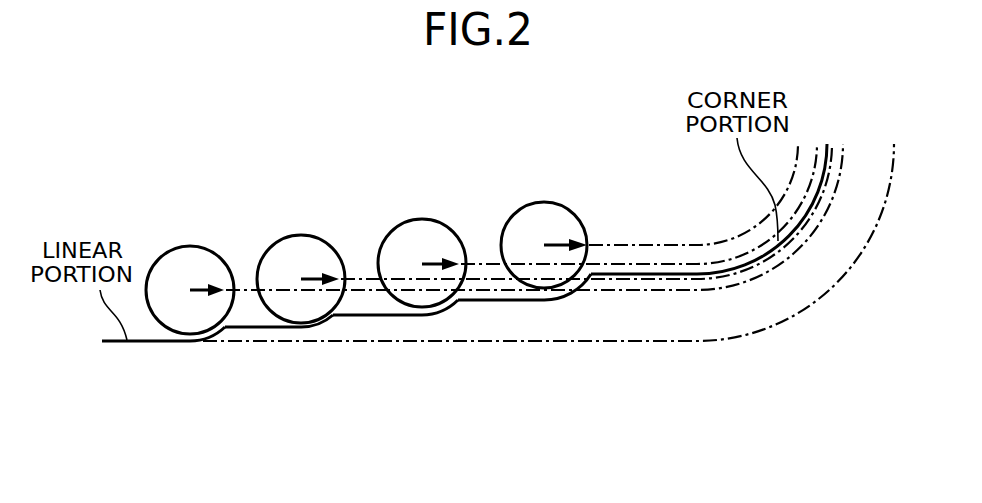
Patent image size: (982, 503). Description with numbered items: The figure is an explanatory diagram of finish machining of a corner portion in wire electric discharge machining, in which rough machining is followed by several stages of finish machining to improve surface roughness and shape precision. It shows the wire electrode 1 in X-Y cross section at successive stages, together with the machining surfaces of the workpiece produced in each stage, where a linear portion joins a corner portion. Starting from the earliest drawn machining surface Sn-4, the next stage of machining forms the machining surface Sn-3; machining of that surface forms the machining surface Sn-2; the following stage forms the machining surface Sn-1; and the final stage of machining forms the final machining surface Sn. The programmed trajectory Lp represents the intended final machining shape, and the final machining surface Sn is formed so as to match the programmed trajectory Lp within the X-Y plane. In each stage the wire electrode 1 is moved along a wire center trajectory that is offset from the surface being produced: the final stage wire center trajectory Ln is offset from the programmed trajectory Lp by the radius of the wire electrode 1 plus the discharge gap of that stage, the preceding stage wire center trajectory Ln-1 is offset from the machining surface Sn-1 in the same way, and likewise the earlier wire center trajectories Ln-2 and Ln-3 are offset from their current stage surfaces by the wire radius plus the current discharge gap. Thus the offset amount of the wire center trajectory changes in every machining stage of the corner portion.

The wire electrode 1 is at (172, 260).
The n-stage wire center trajectory Ln is at (245, 288).
The n-1 stage wire center trajectory Ln-1 is at (362, 278).
The n-2 stage wire center trajectory Ln-2 is at (485, 262).
The n-3 stage wire center trajectory Ln-3 is at (608, 244).
The programmed trajectory Lp is at (337, 342).
The n-stage machining surface Sn is at (148, 342).
The n-1 stage machining surface Sn-1 is at (248, 328).
The n-2 stage machining surface Sn-2 is at (387, 317).
The n-3 stage machining surface Sn-3 is at (503, 301).
The n-4 stage machining surface Sn-4 is at (658, 276).